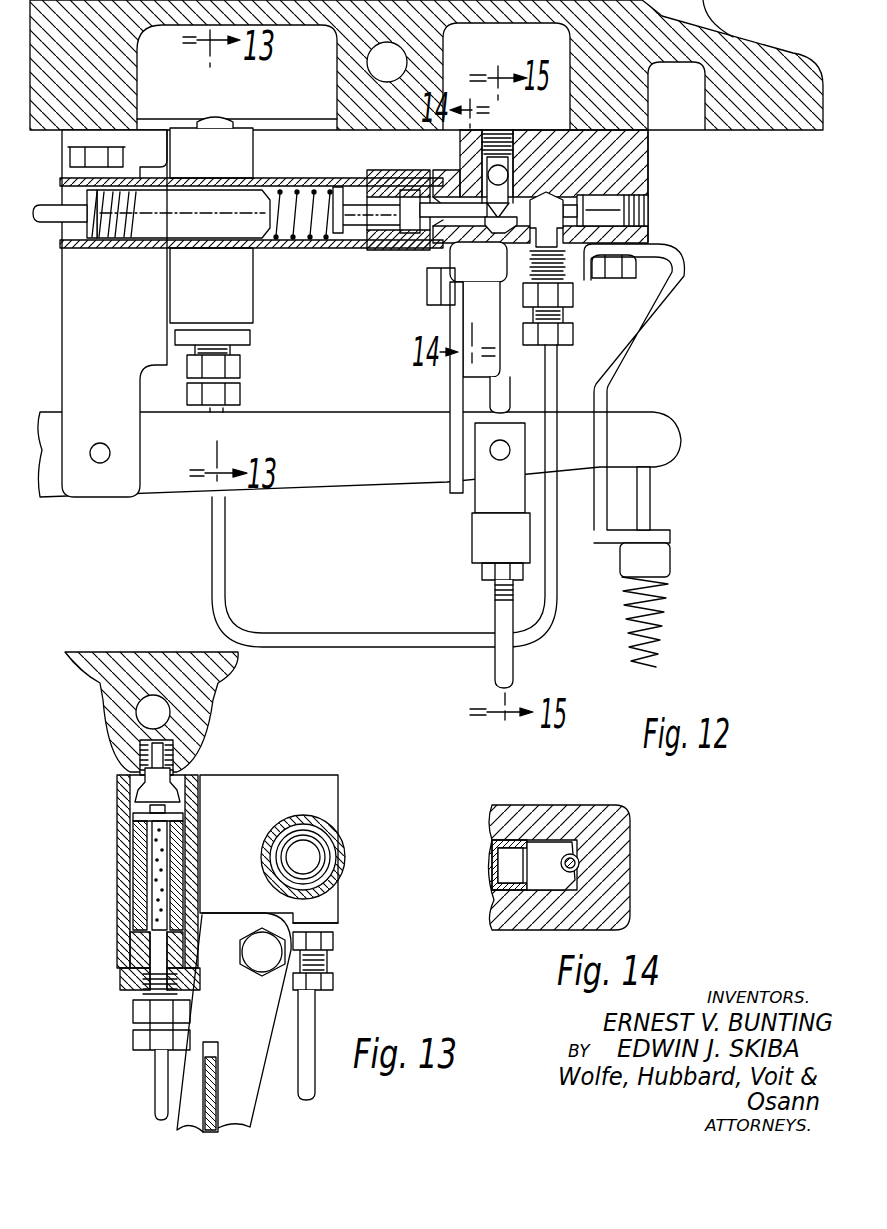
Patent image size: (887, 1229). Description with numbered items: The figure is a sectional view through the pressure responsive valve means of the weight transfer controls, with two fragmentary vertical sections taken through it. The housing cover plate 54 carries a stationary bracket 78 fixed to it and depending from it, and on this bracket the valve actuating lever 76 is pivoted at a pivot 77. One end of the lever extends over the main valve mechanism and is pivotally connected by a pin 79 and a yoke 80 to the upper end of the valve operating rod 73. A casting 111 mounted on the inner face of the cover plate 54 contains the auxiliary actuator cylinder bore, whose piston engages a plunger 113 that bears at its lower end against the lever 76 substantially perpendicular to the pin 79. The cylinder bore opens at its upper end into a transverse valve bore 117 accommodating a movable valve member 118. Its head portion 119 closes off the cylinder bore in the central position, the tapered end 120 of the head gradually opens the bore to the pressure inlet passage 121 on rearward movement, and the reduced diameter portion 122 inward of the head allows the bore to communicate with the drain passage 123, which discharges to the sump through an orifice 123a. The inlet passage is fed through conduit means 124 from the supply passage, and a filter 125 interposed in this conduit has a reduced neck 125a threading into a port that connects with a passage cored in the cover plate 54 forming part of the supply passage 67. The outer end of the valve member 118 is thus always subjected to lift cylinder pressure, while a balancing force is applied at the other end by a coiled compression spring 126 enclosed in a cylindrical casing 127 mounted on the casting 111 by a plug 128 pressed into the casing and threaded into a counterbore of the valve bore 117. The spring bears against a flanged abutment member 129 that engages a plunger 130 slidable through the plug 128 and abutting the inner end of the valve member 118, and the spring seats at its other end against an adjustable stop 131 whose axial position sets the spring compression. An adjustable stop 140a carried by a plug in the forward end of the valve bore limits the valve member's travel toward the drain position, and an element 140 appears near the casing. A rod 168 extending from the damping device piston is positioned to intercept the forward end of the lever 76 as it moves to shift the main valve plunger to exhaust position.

In FIG. 12, the housing cover plate 54 is at (745, 57).
In FIG. 13, the housing cover plate 54 is at (107, 700).
In FIG. 12, the conduit means 67 is at (376, 70).
In FIG. 13, the conduit means 67 is at (178, 716).
In FIG. 12, the valve operating rod 73 is at (497, 617).
In FIG. 12, the valve actuating lever 76 is at (353, 482).
In FIG. 12, the pivot 77 is at (98, 463).
In FIG. 12, the stationary bracket 78 is at (127, 488).
In FIG. 12, the pin 79 is at (498, 453).
In FIG. 12, the yoke 80 is at (483, 557).
In FIG. 12, the casting 111 is at (472, 375).
In FIG. 13, the casting 111 is at (300, 783).
In FIG. 14, the casting 111 is at (619, 821).
In FIG. 12, the plunger 113 is at (503, 398).
In FIG. 12, the transverse valve bore 117 is at (441, 250).
In FIG. 14, the transverse valve bore 117 is at (581, 872).
In FIG. 12, the movable valve member 118 is at (432, 201).
In FIG. 14, the movable valve member 118 is at (587, 858).
In FIG. 12, the head portion 119 is at (494, 234).
In FIG. 12, the tapered end 120 is at (532, 196).
In FIG. 12, the pressure inlet passage 121 is at (588, 279).
In FIG. 12, the reduced diameter portion 122 is at (455, 180).
In FIG. 14, the drain passage 123 is at (537, 843).
In FIG. 14, the orifice 123a is at (490, 864).
In FIG. 12, the conduit means 124 is at (208, 571).
In FIG. 13, the conduit means 124 is at (156, 1087).
In FIG. 12, the filter 125 is at (248, 312).
In FIG. 13, the filter 125 is at (117, 870).
In FIG. 12, the reduced neck 125a is at (203, 120).
In FIG. 13, the reduced neck 125a is at (137, 762).
In FIG. 12, the coiled compression spring 126 is at (136, 215).
In FIG. 13, the coiled compression spring 126 is at (330, 873).
In FIG. 12, the cylindrical casing 127 is at (262, 250).
In FIG. 13, the cylindrical casing 127 is at (327, 833).
In FIG. 12, the plug 128 is at (356, 251).
In FIG. 12, the flanged abutment member 129 is at (303, 190).
In FIG. 12, the plunger 130 is at (352, 205).
In FIG. 12, the adjustable stop 131 is at (90, 241).
In FIG. 12, the rod 140 is at (55, 225).
In FIG. 12, the adjustable stop 140a is at (582, 194).
In FIG. 12, the rod 168 is at (648, 507).